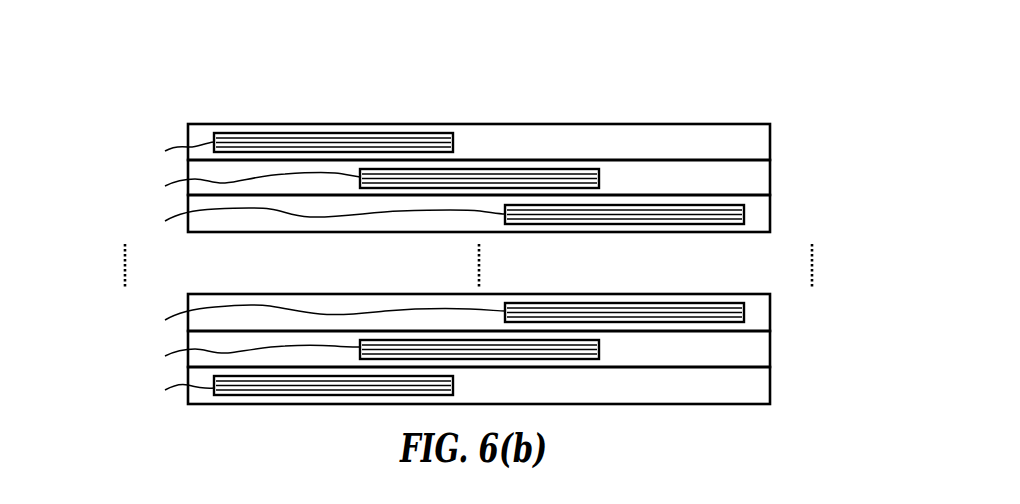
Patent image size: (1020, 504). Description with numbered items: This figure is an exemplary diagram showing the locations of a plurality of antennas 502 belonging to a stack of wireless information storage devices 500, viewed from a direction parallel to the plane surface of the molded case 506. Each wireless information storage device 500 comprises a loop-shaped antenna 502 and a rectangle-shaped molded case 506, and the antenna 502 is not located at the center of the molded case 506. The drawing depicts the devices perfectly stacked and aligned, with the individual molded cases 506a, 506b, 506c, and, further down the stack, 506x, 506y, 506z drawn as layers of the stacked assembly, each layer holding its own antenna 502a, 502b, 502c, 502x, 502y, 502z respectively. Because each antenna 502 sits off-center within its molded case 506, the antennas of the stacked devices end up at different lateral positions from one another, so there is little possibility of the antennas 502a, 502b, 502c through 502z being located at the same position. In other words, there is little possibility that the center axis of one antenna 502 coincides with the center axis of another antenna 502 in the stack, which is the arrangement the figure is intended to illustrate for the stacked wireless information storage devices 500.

The wireless information storage device 500 is at (537, 112).
The antenna 502 is at (156, 142).
The antenna 502a is at (281, 145).
The antenna 502b is at (354, 181).
The antenna 502c is at (427, 216).
The antenna 502x is at (427, 315).
The antenna 502y is at (354, 351).
The antenna 502z is at (281, 387).
The molded case 506 is at (677, 123).
The molded case 506a is at (760, 152).
The molded case 506b is at (760, 187).
The molded case 506c is at (760, 220).
The molded case 506x is at (760, 311).
The molded case 506y is at (760, 347).
The molded case 506z is at (760, 383).